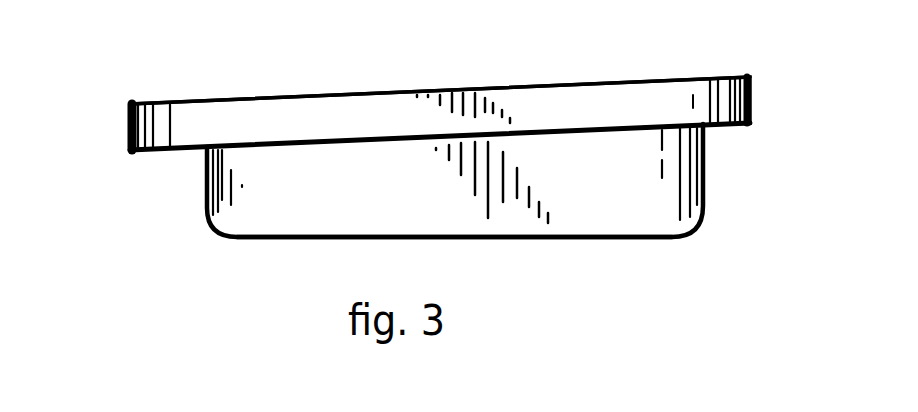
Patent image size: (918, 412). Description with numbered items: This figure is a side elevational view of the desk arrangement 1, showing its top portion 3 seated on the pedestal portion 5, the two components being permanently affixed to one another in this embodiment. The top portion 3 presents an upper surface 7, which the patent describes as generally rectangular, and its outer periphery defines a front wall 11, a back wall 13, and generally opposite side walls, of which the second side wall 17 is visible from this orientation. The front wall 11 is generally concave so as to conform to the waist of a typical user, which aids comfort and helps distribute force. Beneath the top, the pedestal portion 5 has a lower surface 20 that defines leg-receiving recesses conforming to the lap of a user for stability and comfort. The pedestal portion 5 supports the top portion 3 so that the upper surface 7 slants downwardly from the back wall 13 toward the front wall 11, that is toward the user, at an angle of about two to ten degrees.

The desk arrangement 1 is at (138, 107).
The top portion 3 is at (382, 93).
The pedestal portion 5 is at (687, 236).
The upper surface 7 is at (273, 98).
The front wall 11 is at (128, 127).
The back wall 13 is at (750, 95).
The second side wall 17 is at (518, 102).
The lower surface 20 is at (587, 242).